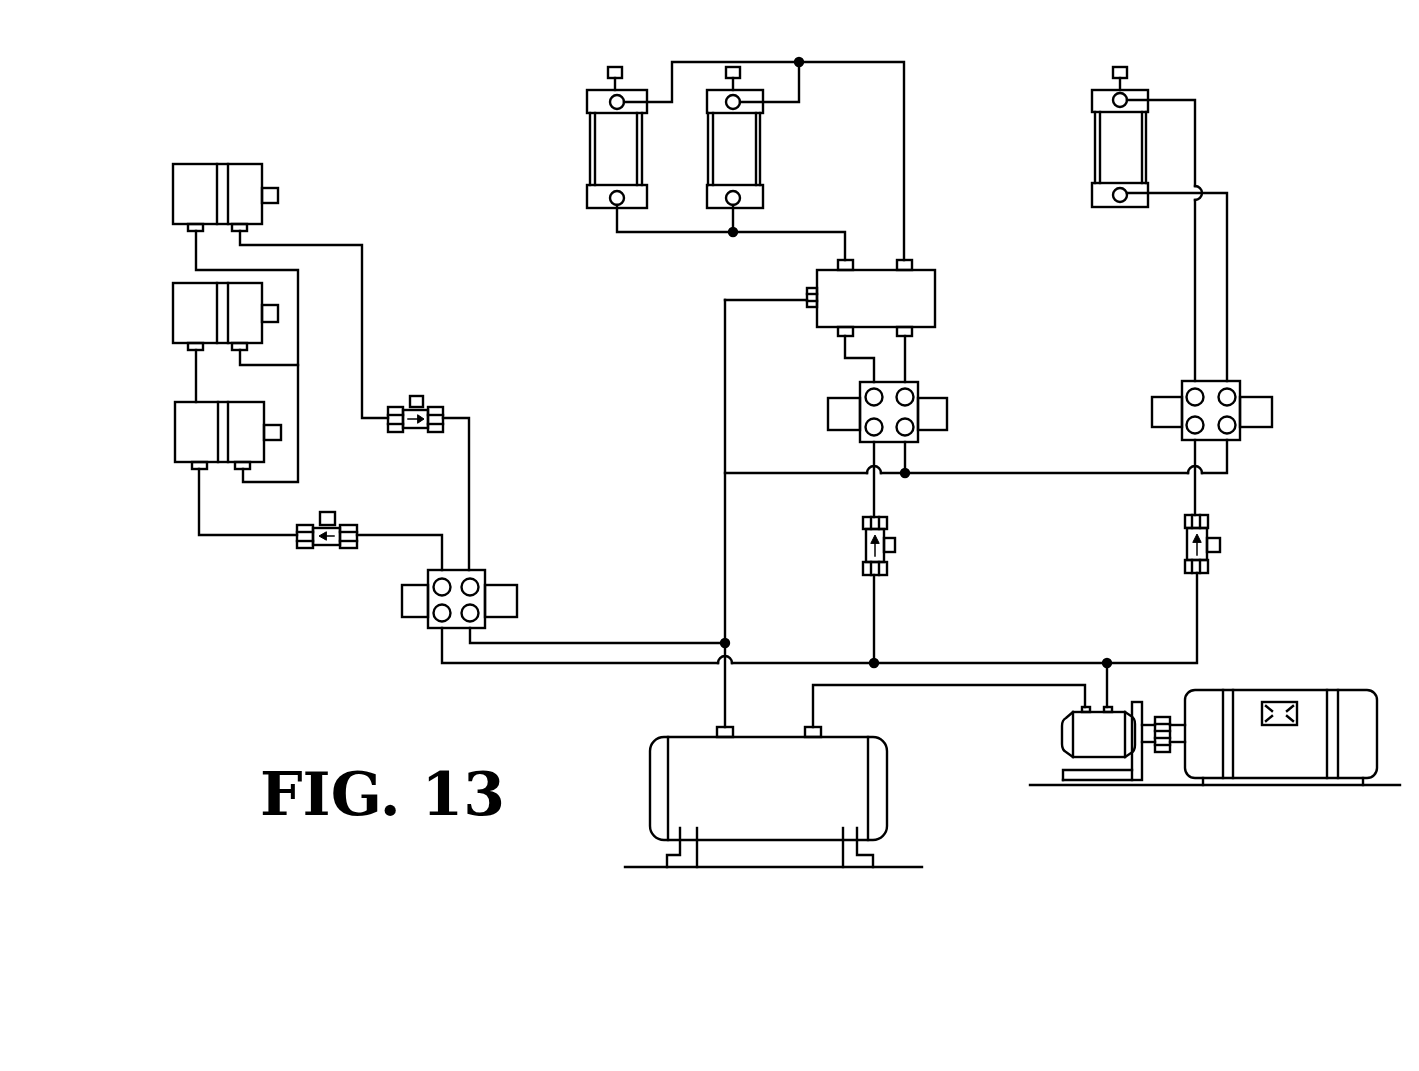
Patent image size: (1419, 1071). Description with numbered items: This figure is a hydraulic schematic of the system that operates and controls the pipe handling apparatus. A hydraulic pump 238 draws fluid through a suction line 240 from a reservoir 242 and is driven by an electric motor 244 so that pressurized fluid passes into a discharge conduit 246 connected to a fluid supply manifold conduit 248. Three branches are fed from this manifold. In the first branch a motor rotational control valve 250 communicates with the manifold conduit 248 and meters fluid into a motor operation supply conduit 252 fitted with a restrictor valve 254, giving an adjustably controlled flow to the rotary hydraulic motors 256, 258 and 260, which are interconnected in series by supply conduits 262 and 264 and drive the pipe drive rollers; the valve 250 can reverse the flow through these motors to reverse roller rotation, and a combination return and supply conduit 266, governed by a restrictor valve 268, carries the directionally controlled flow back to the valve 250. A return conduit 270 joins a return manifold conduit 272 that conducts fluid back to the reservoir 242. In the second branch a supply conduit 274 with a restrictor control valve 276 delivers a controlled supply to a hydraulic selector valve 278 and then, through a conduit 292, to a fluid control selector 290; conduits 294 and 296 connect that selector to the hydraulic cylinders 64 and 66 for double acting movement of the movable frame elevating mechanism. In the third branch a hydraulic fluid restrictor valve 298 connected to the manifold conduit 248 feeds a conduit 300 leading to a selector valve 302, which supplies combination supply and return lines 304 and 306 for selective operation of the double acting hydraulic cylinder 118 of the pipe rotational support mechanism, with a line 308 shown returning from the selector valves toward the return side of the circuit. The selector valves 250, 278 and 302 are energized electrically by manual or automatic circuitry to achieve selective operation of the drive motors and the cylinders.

The hydraulic cylinder 64 is at (607, 147).
The hydraulic cylinder 66 is at (750, 148).
The double acting hydraulic cylinder 118 is at (1110, 138).
The hydraulic pump 238 is at (1062, 740).
The suction line 240 is at (945, 685).
The reservoir 242 is at (847, 745).
The electric motor 244 is at (1245, 692).
The discharge conduit 246 is at (1110, 679).
The fluid supply manifold conduit 248 is at (1030, 660).
The motor rotational control valve 250 is at (485, 572).
The motor operation supply conduit 252 is at (408, 535).
The restrictor valve 254 is at (350, 525).
The rotary hydraulic motor 256 is at (237, 170).
The rotary hydraulic motor 258 is at (178, 335).
The rotary hydraulic motor 260 is at (185, 447).
The supply conduit 262 is at (300, 450).
The supply conduit 264 is at (300, 332).
The combination return and supply conduit 266 is at (365, 295).
The restrictor valve 268 is at (438, 408).
The return conduit 270 is at (600, 643).
The return manifold conduit 272 is at (728, 692).
The supply conduit 274 is at (877, 619).
The restrictor control valve 276 is at (868, 543).
The hydraulic selector valve 278 is at (860, 388).
The fluid control selector 290 is at (920, 297).
The conduit 292 is at (843, 352).
The conduit 294 is at (790, 235).
The conduit 296 is at (905, 140).
The hydraulic fluid restrictor valve 298 is at (1187, 543).
The conduit 300 is at (1198, 490).
The selector valve 302 is at (1238, 382).
The combination supply and return line 304 is at (1190, 263).
The combination supply and return line 306 is at (1229, 275).
The return line 308 is at (1075, 473).